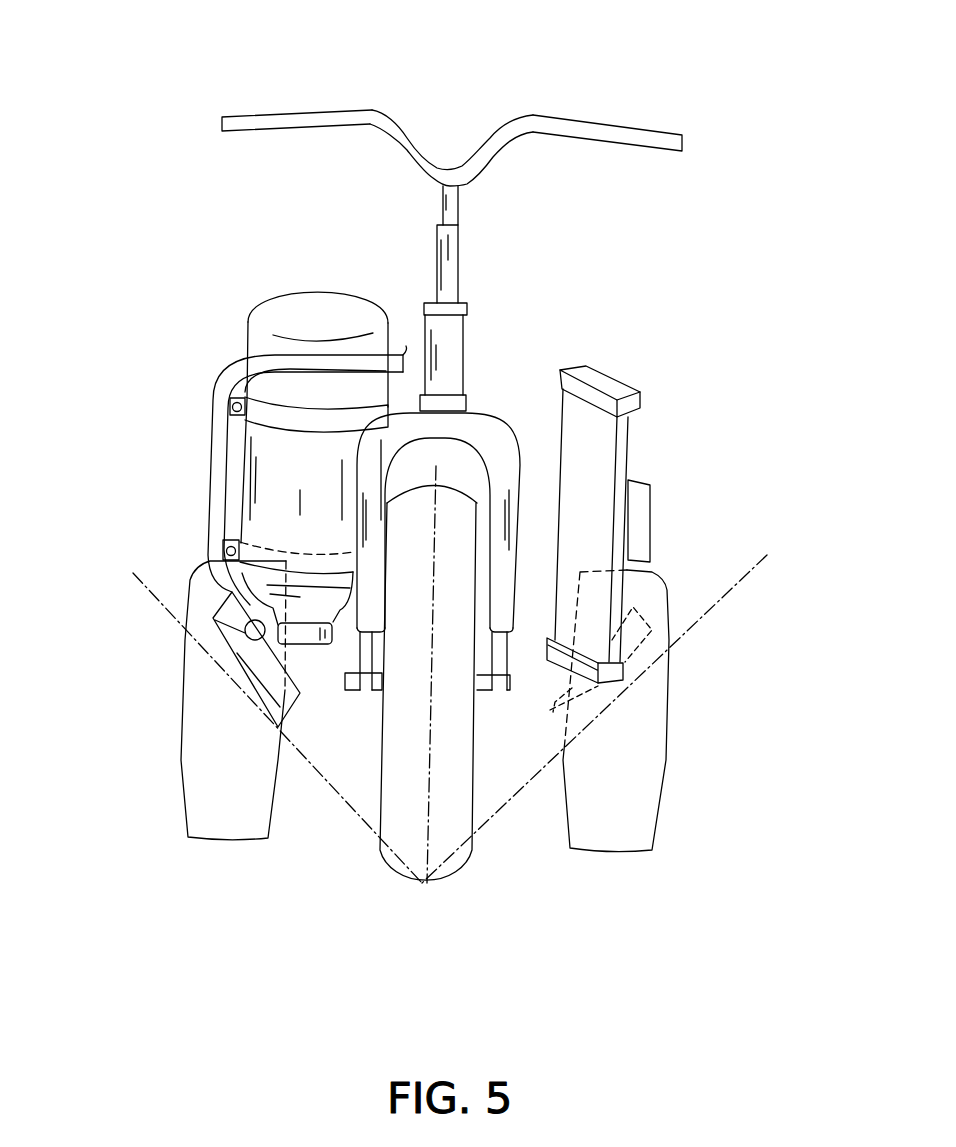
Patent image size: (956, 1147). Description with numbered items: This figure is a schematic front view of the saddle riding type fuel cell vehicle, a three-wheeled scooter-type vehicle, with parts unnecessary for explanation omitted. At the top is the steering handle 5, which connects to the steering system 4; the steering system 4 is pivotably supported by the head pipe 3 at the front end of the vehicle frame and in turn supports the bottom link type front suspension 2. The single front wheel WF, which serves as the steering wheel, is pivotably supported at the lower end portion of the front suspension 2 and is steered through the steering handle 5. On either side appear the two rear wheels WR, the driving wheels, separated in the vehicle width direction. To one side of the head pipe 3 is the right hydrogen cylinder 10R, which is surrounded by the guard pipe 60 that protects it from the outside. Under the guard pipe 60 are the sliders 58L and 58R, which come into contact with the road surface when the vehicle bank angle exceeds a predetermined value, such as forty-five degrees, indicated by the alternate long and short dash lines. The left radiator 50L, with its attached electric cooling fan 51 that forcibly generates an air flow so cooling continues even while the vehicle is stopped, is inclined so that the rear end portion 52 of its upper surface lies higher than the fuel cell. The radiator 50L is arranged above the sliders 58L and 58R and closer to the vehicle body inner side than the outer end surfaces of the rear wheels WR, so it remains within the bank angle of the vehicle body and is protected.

The steering handle 5 is at (294, 117).
The steering system 4 is at (455, 263).
The head pipe 3 is at (458, 352).
The right hydrogen cylinder 10R is at (287, 302).
The guard pipe 60 is at (208, 440).
The right slider 58R is at (255, 688).
The bottom link type front suspension 2 is at (519, 522).
The front wheel WF is at (452, 867).
The rear wheels WR is at (230, 835).
The rear end portion of the radiator upper surface 52 is at (568, 348).
The left radiator 50L is at (633, 437).
The electric cooling fan 51 is at (645, 518).
The left slider 58L is at (625, 665).